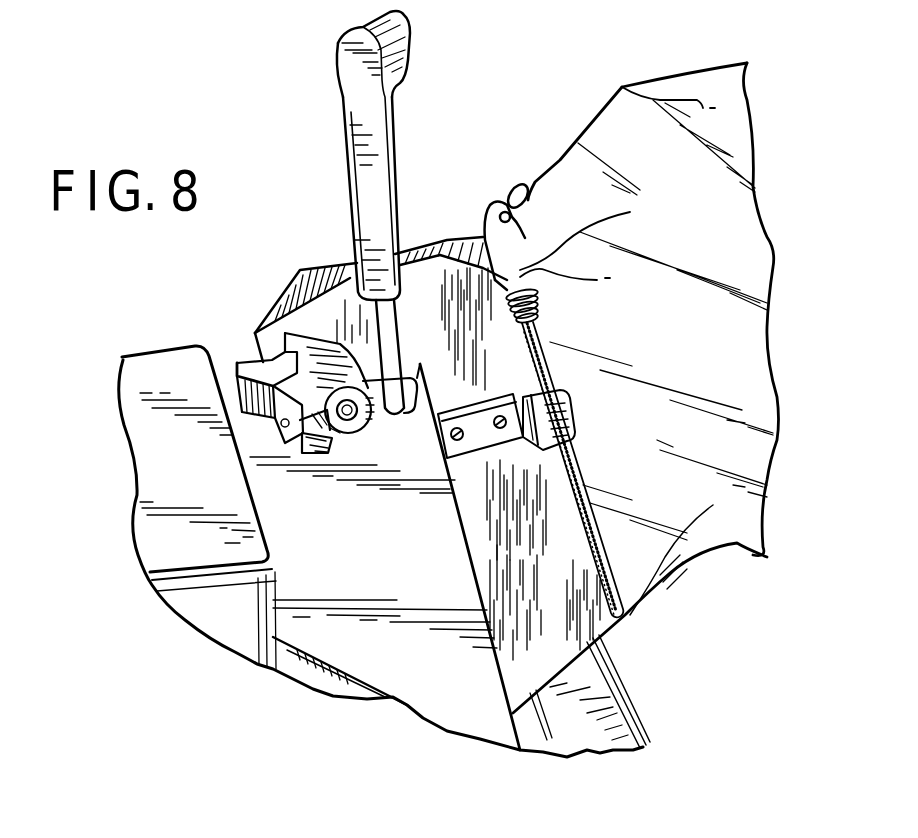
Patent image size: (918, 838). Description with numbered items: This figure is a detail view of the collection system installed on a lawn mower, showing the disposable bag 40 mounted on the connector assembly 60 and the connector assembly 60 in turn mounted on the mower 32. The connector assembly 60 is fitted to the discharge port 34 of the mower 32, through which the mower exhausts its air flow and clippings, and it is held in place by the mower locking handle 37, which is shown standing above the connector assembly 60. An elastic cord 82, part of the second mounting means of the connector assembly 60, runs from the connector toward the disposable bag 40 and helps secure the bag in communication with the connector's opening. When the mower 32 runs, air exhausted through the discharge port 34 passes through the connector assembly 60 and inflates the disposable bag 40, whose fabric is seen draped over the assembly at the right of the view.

The mower 32 is at (320, 672).
The discharge port 34 is at (505, 640).
The mower locking handle 37 is at (337, 73).
The disposable bag 40 is at (725, 533).
The connector assembly 60 is at (443, 232).
The elastic cord 82 is at (607, 567).